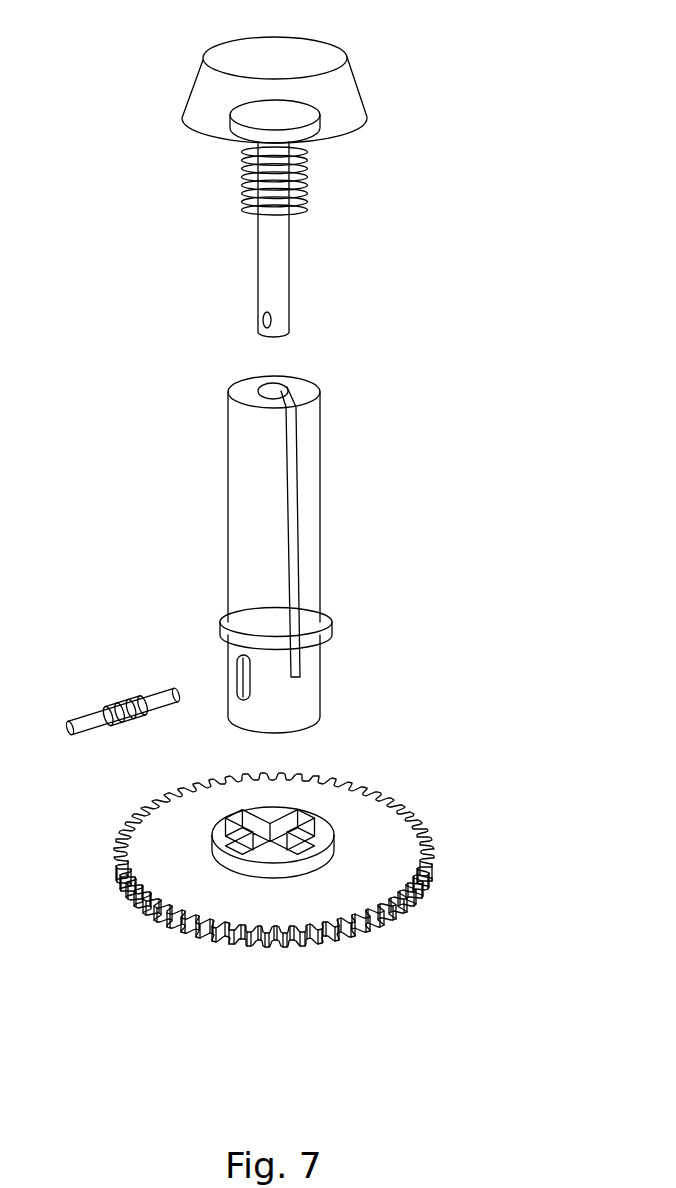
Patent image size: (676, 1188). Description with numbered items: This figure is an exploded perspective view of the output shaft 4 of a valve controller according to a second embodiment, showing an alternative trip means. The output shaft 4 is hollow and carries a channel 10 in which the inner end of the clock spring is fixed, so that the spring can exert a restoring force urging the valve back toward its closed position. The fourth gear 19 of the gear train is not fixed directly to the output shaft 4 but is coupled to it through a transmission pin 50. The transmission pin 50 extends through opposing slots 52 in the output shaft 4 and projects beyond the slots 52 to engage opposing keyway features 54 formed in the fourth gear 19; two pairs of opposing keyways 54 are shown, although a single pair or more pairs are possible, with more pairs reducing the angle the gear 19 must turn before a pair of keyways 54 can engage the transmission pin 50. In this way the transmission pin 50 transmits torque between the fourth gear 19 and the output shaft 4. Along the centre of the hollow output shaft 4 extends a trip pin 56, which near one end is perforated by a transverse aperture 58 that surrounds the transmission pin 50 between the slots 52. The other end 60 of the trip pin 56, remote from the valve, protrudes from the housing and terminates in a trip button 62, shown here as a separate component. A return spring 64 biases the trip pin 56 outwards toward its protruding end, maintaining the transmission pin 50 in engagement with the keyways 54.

The trip button 62 is at (347, 92).
The other end of the trip pin 60 is at (308, 132).
The return spring 64 is at (302, 192).
The trip pin 56 is at (278, 265).
The transverse aperture 58 is at (270, 320).
The output shaft 4 is at (311, 522).
The channel 10 is at (293, 440).
The slots 52 is at (243, 672).
The transmission pin 50 is at (88, 717).
The fourth gear 19 is at (385, 822).
The keyway features 54 is at (312, 845).